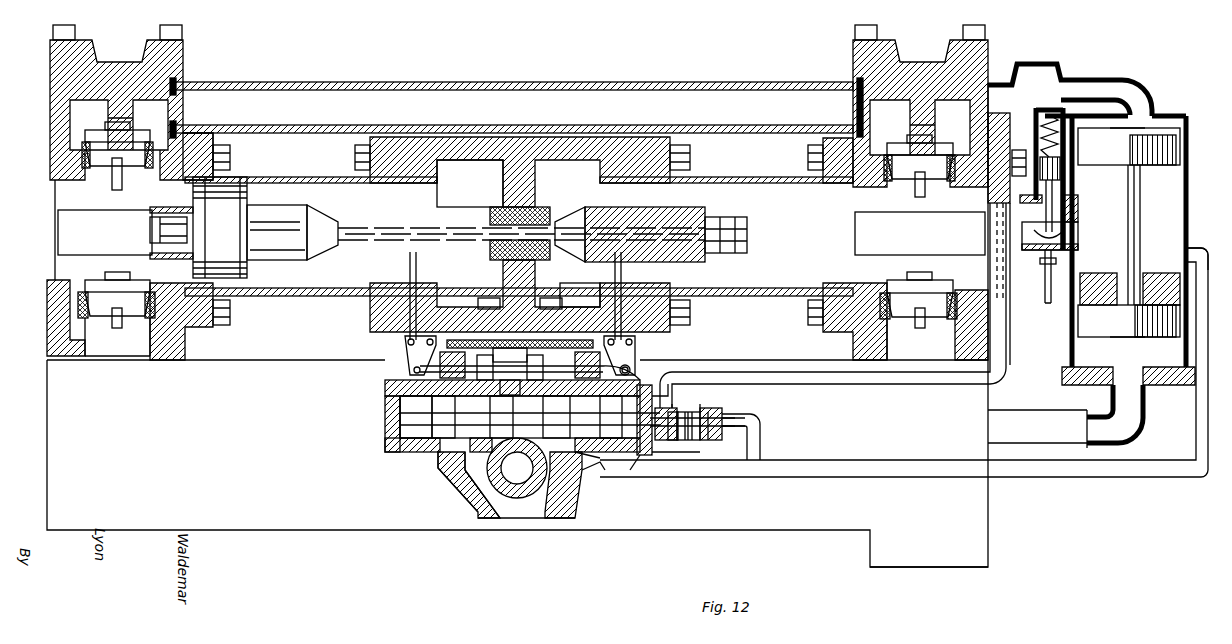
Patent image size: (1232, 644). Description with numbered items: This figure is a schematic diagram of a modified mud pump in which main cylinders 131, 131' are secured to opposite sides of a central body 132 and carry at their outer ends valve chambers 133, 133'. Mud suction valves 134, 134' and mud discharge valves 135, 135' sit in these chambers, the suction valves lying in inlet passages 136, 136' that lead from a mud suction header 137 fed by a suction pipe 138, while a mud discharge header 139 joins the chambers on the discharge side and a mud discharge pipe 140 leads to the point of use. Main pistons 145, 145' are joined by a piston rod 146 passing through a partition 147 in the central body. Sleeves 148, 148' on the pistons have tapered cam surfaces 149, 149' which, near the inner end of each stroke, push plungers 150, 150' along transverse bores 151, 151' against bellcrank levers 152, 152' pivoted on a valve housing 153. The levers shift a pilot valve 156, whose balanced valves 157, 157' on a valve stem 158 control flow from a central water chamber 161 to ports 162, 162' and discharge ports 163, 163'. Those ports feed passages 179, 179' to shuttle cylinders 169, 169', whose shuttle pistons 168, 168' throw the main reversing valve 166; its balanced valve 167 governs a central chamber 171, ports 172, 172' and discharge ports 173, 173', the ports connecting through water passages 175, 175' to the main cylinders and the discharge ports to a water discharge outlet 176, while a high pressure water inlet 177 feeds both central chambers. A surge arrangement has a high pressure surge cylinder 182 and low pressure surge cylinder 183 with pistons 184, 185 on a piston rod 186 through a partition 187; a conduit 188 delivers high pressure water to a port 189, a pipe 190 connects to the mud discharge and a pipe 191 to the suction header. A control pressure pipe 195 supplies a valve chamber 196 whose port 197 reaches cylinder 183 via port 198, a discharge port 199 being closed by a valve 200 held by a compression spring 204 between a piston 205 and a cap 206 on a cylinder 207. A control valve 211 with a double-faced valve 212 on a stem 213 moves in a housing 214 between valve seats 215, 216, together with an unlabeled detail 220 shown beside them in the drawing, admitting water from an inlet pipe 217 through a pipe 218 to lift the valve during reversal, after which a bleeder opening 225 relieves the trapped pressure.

The main cylinder 131 is at (519, 224).
The main cylinder 131' is at (726, 167).
The central body 132 is at (462, 137).
The valve chamber 133 is at (194, 321).
The valve chamber 133' is at (847, 321).
The mud suction valve 134 is at (116, 280).
The mud suction valve 134' is at (909, 295).
The mud discharge valve 135 is at (148, 143).
The mud discharge valve 135' is at (889, 147).
The inlet passage 136 is at (117, 351).
The inlet passage 136' is at (953, 325).
The mud suction header 137 is at (990, 515).
The suction pipe 138 is at (985, 552).
The mud discharge header 139 is at (722, 82).
The mud discharge pipe 140 is at (1012, 80).
The main piston 145 is at (225, 164).
The main piston 145' is at (771, 166).
The piston rod 146 is at (378, 219).
The partition 147 is at (512, 183).
The sleeve 148 is at (250, 227).
The sleeve 148' is at (666, 221).
The tapered cam surface 149 is at (331, 222).
The tapered cam surface 149' is at (572, 221).
The plunger 150 is at (458, 232).
The plunger 150' is at (589, 250).
The transverse bore 151 is at (391, 296).
The transverse bore 151' is at (621, 296).
The bellcrank lever 152 is at (398, 354).
The bellcrank lever 152' is at (638, 354).
The valve housing 153 is at (452, 472).
The pilot valve 156 is at (624, 364).
The balanced valve 157 is at (520, 360).
The balanced valve 157' is at (543, 367).
The valve stem 158 is at (512, 382).
The central water chamber 161 is at (503, 417).
The port 162 is at (400, 429).
The port 162' is at (659, 441).
The discharge port 163 is at (530, 296).
The discharge port 163' is at (585, 296).
The main valve 166 is at (640, 452).
The balanced valve 167 is at (557, 417).
The main reversing valve 168 is at (494, 393).
The shuttle piston 168' is at (675, 381).
The shuttle cylinder 169 is at (494, 424).
The shuttle cylinder 169' is at (676, 461).
The central chamber 171 is at (562, 480).
The port 172 is at (469, 486).
The port 172' is at (609, 479).
The discharge port 173 is at (419, 436).
The discharge port 173' is at (660, 484).
The water passage 175 is at (492, 288).
The water passage 175' is at (569, 286).
The water discharge outlet 176 is at (505, 522).
The high pressure water inlet 177 is at (517, 484).
The passage 179 is at (479, 373).
The passage 179' is at (635, 378).
The high pressure surge cylinder 182 is at (1085, 140).
The low pressure surge cylinder 183 is at (1118, 322).
The piston 184 is at (1138, 160).
The piston 185 is at (1160, 337).
The piston rod 186 is at (1132, 200).
The partition 187 is at (1161, 289).
The conduit 188 is at (1082, 477).
The port 189 is at (1202, 248).
The pipe 190 is at (1125, 85).
The pipe 191 is at (1140, 425).
The control pressure pipe 195 is at (1046, 270).
The valve chamber 196 is at (1022, 240).
The port 197 is at (1098, 289).
The port 198 is at (1072, 270).
The discharge port 199 is at (1035, 234).
The valve 200 is at (1070, 215).
The compression spring 204 is at (1046, 115).
The piston 205 is at (1012, 160).
The cap 206 is at (1064, 115).
The cylinder 207 is at (1036, 135).
The control valve 211 is at (720, 410).
The double-faced valve 212 is at (710, 436).
The stem 213 is at (672, 436).
The valve housing 214 is at (705, 410).
The valve seat 215 is at (690, 402).
The valve seat 216 is at (735, 423).
The high pressure water inlet pipe 217 is at (762, 442).
The pipe 218 is at (1004, 386).
The gasket 220 is at (690, 436).
The bleeder opening 225 is at (1022, 198).